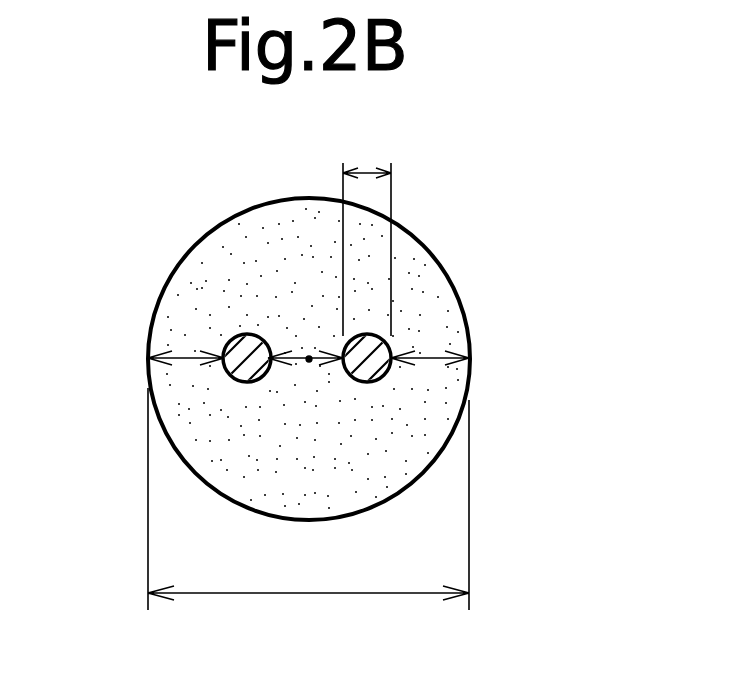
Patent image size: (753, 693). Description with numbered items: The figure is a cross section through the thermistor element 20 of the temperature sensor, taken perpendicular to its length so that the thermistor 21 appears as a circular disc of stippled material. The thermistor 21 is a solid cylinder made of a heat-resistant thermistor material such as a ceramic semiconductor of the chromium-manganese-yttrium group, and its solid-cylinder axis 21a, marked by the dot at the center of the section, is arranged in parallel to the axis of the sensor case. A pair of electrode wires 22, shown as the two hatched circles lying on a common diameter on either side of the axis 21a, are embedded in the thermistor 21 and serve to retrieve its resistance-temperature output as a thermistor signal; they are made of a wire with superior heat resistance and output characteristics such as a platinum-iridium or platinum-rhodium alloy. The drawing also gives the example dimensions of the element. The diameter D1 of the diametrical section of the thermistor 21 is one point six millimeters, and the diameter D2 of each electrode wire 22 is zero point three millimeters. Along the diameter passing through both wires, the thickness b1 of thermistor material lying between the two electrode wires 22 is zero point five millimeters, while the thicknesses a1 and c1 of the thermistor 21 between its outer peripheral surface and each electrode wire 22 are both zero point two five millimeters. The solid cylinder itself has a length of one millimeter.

The thermistor element 20 is at (140, 278).
The thermistor 21 is at (180, 260).
The solid-cylinder axis 21a is at (308, 354).
The electrode wires 22 is at (237, 372).
The thickness of diametrical portion between outer peripheral surface and electrode a1 is at (188, 358).
The thickness of portion between the electrode wires b1 is at (294, 355).
The thickness of diametrical portion between outer peripheral surface and electrode c1 is at (433, 358).
The diameter of the diametrical section of the thermistor D1 is at (308, 499).
The diameter of the electrode wire D2 is at (367, 230).